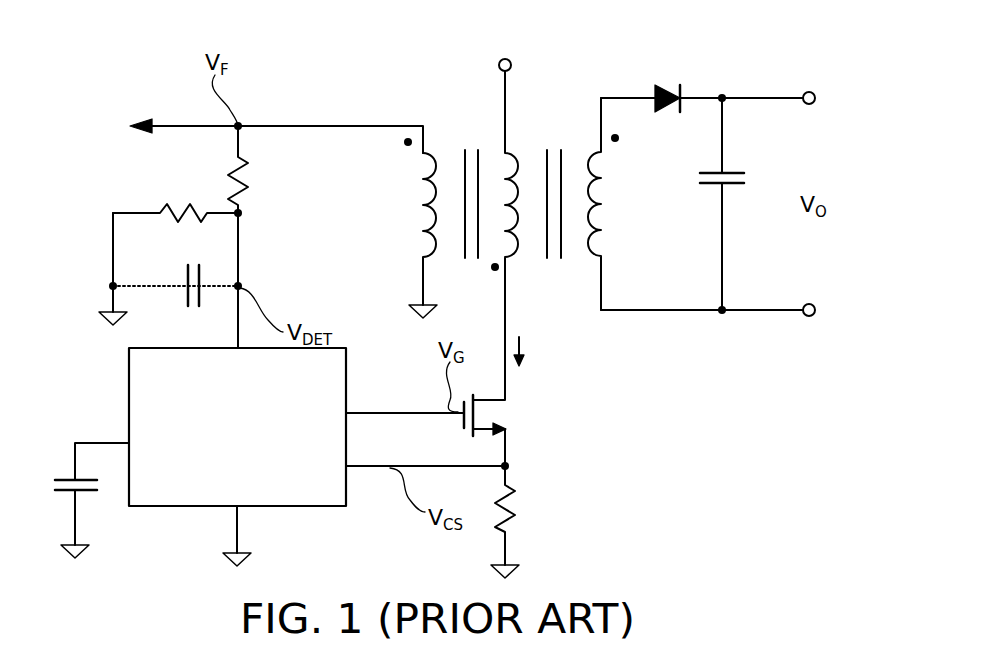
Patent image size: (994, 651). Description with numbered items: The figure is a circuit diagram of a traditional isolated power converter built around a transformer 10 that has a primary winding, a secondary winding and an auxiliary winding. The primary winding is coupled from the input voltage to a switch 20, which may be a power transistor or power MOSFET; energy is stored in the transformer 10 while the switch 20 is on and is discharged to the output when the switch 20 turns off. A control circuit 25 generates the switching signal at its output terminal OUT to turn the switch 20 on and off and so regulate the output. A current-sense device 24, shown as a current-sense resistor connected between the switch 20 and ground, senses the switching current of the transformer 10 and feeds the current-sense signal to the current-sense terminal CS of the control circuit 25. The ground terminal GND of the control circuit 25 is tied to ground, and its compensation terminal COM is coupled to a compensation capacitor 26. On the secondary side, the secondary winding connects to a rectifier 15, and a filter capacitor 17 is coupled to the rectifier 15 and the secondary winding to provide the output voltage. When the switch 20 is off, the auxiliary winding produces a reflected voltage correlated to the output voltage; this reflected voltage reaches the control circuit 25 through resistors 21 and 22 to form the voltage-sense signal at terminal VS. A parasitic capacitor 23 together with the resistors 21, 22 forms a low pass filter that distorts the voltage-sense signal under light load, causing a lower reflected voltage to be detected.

The transformer 10 is at (517, 160).
The rectifier 15 is at (655, 97).
The filter capacitor 17 is at (728, 185).
The switch 20 is at (478, 422).
The resistor 21 is at (245, 190).
The resistor 22 is at (162, 212).
The parasitic capacitor 23 is at (186, 278).
The current-sense device 24 is at (512, 522).
The control circuit 25 is at (129, 378).
The compensation capacitor 26 is at (85, 497).